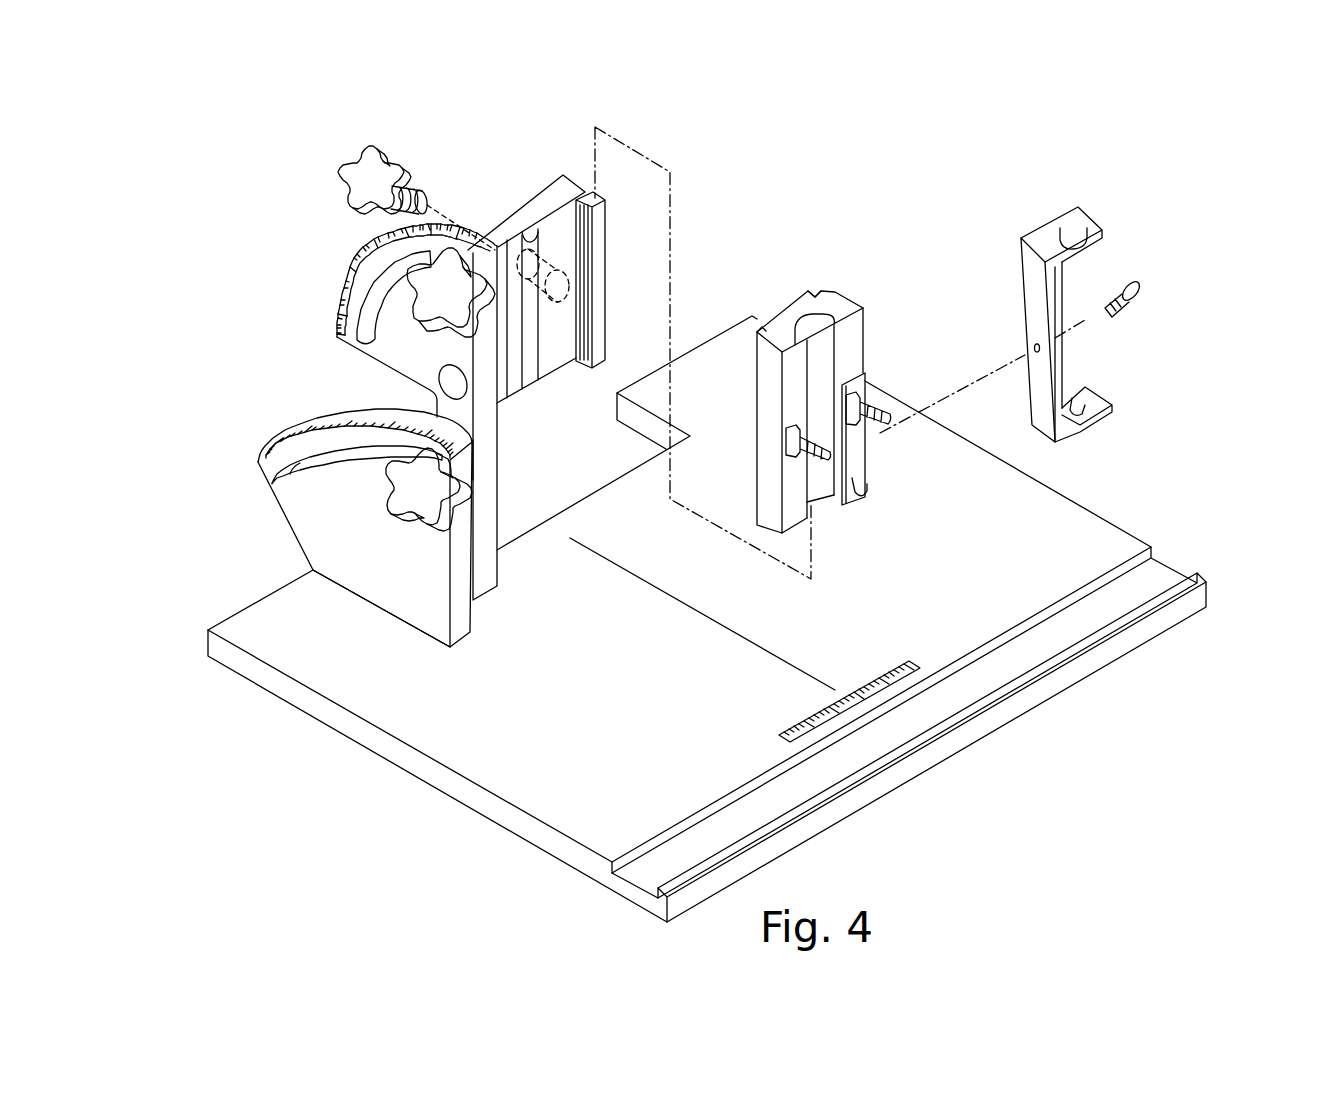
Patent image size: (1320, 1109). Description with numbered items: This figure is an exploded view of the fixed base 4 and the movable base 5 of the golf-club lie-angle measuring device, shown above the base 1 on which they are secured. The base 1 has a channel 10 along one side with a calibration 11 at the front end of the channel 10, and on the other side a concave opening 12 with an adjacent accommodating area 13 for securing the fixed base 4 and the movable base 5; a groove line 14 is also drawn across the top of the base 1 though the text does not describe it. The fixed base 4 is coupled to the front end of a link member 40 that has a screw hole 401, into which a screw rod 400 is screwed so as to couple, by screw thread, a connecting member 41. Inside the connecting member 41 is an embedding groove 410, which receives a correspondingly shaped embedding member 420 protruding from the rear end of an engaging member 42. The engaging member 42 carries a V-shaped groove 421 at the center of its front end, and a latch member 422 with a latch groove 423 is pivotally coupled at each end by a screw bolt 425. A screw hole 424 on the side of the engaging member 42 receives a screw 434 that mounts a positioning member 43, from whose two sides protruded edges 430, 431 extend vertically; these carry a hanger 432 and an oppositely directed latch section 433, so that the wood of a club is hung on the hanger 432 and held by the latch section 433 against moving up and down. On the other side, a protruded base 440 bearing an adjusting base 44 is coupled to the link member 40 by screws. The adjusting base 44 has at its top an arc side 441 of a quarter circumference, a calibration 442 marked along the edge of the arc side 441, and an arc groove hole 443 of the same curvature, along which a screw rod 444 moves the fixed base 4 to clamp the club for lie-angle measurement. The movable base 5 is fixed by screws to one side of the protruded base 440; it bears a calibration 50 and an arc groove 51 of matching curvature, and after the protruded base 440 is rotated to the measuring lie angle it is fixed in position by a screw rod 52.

The base 1 is at (457, 772).
The channel 10 is at (902, 722).
The calibration 11 is at (900, 663).
The concave opening 12 is at (602, 472).
The accommodating area 13 is at (377, 610).
The guide groove 14 is at (701, 616).
The fixed base 4 is at (516, 180).
The link member 40 is at (526, 213).
The screw rod 400 is at (356, 175).
The screw hole 401 is at (569, 286).
The connecting member 41 is at (598, 224).
The embedding groove 410 is at (578, 201).
The engaging member 42 is at (842, 293).
The embedding member 420 is at (816, 288).
The V-shaped groove 421 is at (822, 351).
The latch member 422 is at (856, 459).
The latch groove 423 is at (858, 483).
The screw hole 424 is at (830, 463).
The screw bolt 425 is at (879, 412).
The positioning member 43 is at (1037, 323).
The protruded edge 430 is at (1038, 245).
The protruded edge 431 is at (1095, 407).
The hanger 432 is at (1075, 217).
The latch section 433 is at (1075, 395).
The screw 434 is at (1147, 285).
The adjusting base 44 is at (410, 343).
The protruded base 440 is at (482, 465).
The arc side 441 is at (419, 233).
The calibration 442 is at (346, 282).
The arc groove hole 443 is at (366, 318).
The screw rod 444 is at (436, 291).
The movable base 5 is at (278, 431).
The calibration 50 is at (280, 440).
The arc groove 51 is at (278, 480).
The screw rod 52 is at (418, 490).